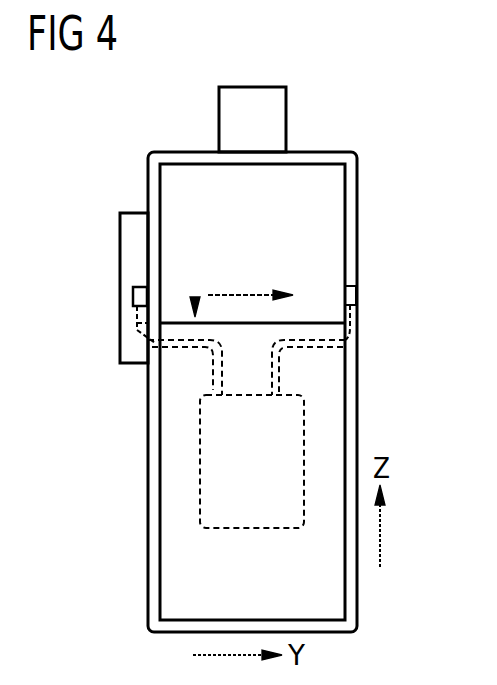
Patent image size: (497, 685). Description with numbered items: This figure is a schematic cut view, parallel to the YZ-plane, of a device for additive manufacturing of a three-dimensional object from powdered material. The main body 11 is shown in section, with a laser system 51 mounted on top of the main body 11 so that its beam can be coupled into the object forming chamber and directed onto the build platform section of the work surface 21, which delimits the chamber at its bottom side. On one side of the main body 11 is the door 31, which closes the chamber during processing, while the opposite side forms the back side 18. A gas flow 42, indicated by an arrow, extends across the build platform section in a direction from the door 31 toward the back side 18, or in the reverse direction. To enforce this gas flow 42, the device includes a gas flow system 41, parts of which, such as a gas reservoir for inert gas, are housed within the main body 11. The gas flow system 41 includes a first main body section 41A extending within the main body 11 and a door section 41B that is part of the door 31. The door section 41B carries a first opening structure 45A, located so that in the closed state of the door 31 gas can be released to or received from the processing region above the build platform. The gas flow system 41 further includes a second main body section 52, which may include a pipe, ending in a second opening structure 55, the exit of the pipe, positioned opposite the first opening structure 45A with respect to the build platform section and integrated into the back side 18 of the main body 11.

The main body 11 is at (147, 563).
The back side 18 is at (373, 206).
The laser system 51 is at (278, 104).
The door 31 is at (129, 212).
The first opening structure 45A is at (134, 290).
The door section 41B is at (114, 327).
The second opening structure 55 is at (346, 292).
The work surface 21 is at (195, 297).
The gas flow 42 is at (238, 295).
The first main body section 41A is at (188, 363).
The second main body section 52 is at (302, 362).
The gas flow system 41 is at (258, 550).